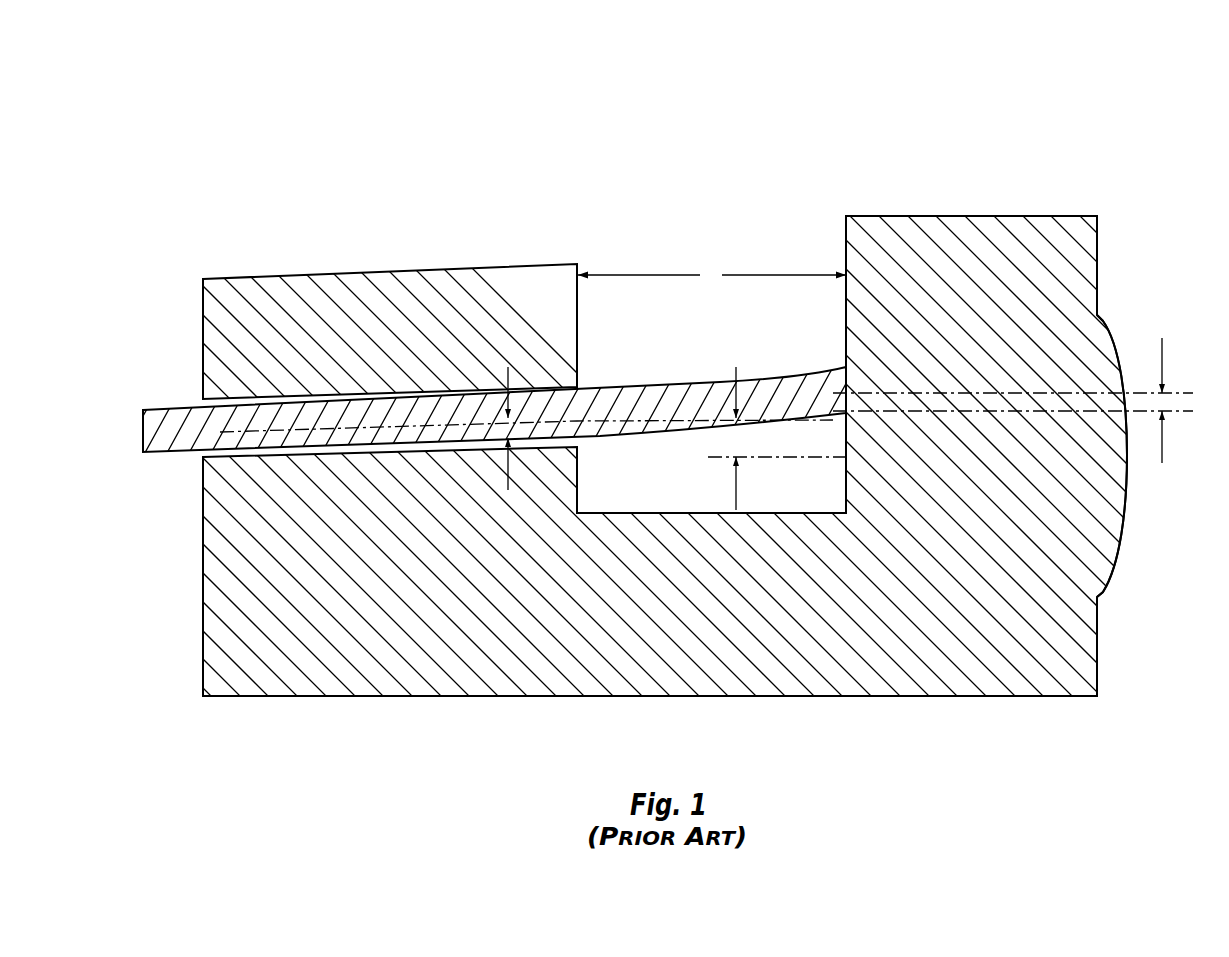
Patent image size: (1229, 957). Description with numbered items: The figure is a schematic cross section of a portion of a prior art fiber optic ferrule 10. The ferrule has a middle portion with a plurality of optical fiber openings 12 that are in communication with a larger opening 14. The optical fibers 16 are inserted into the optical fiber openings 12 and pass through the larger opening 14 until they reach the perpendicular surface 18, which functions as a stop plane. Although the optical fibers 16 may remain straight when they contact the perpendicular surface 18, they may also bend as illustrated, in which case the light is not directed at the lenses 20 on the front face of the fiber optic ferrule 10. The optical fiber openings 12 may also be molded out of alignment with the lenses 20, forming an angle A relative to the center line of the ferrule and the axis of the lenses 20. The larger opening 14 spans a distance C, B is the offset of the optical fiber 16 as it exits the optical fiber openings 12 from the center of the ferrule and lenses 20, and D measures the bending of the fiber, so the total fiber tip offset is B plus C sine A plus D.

The fiber optic ferrule 10 is at (1082, 149).
The optical fiber openings 12 is at (203, 456).
The larger opening 14 is at (721, 338).
The optical fibers 16 is at (170, 425).
The perpendicular surface 18 is at (846, 316).
The lenses 20 is at (1124, 553).